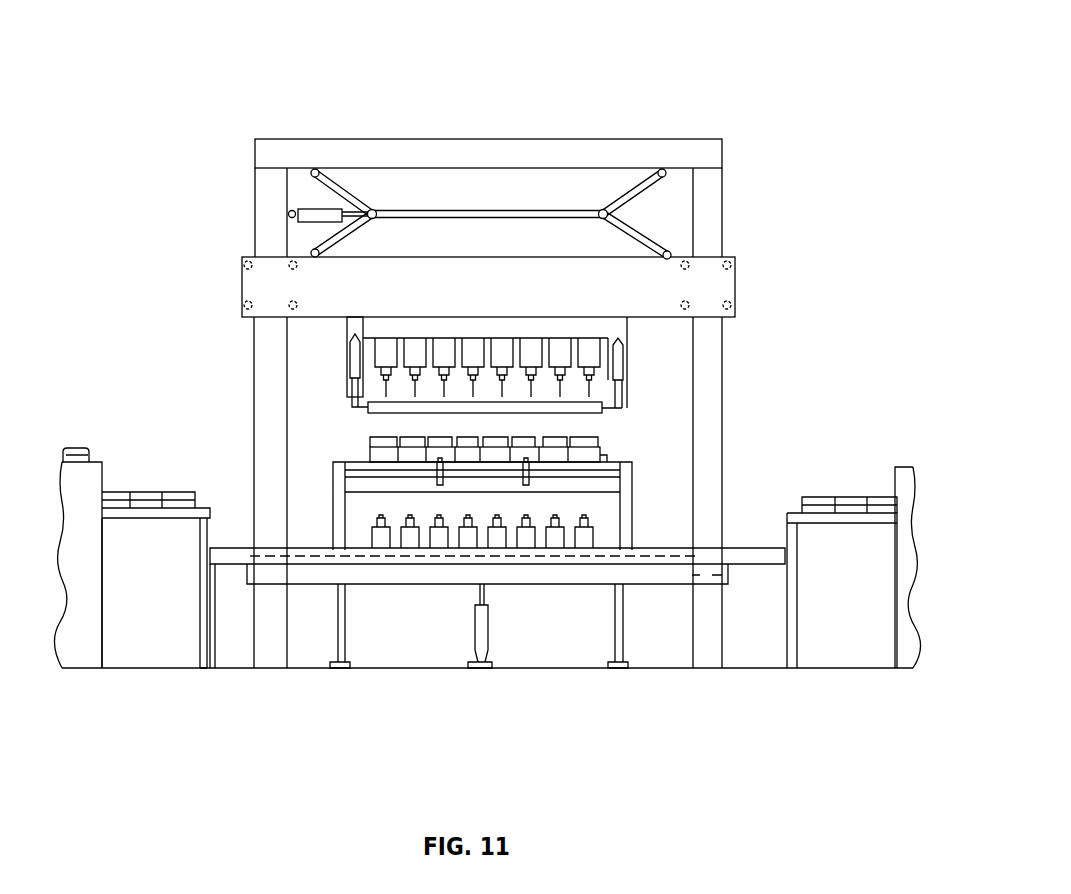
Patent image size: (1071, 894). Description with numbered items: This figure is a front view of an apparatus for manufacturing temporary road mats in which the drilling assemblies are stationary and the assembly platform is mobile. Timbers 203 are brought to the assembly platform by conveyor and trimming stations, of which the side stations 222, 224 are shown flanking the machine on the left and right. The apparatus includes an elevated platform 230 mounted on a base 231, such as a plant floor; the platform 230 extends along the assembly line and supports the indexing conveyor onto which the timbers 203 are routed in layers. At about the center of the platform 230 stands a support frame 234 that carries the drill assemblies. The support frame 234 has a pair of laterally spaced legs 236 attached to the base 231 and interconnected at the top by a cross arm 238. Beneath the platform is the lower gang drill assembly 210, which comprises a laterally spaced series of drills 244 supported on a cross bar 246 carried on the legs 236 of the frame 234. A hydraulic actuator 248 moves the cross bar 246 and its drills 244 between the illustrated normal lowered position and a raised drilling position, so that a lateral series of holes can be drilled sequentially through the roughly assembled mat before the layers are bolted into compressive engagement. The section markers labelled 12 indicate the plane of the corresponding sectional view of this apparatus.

The section line for FIG. 12 is at (758, 72).
The timbers 203 is at (153, 493).
The lower drill assembly 210 is at (605, 534).
The side station 222 is at (133, 523).
The side station 224 is at (911, 458).
The elevated platform 230 is at (342, 462).
The base 231 is at (368, 672).
The support frame 234 is at (675, 137).
The legs 236 is at (718, 185).
The cross arm 238 is at (452, 150).
The drills 244 is at (370, 537).
The cross bar 246 is at (360, 575).
The hydraulic actuator 248 is at (482, 625).